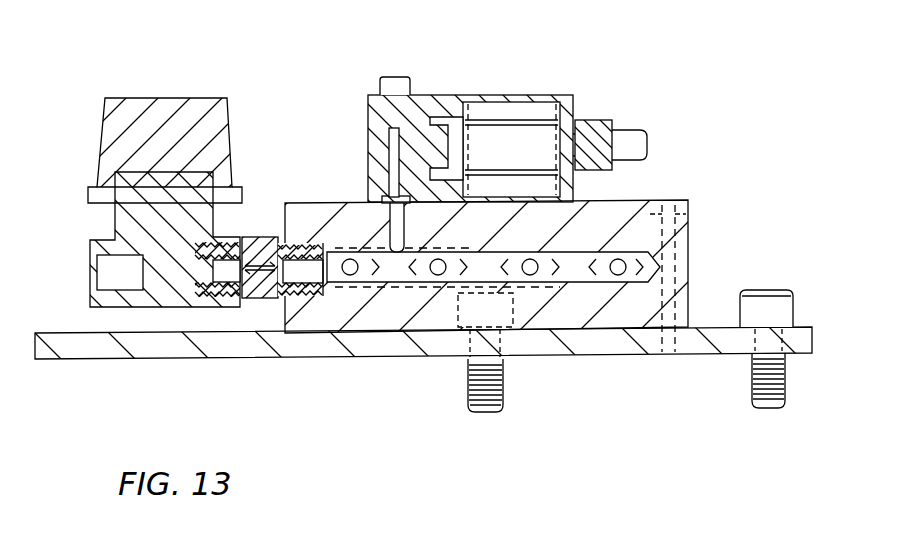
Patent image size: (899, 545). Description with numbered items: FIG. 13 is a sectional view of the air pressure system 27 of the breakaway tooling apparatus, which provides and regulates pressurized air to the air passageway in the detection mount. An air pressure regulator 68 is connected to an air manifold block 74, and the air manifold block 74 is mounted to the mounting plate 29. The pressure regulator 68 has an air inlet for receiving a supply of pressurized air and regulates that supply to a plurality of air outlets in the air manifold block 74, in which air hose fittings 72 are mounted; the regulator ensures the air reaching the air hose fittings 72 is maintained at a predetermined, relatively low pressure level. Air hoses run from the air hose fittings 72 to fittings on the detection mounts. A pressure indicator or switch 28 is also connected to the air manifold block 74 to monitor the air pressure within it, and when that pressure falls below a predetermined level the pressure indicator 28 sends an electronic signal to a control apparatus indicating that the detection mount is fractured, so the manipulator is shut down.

The air pressure system 27 is at (672, 128).
The pressure indicator or switch 28 is at (472, 95).
The mounting plate 29 is at (196, 360).
The air pressure regulator 68 is at (164, 96).
The air hose fittings 72 is at (365, 284).
The air manifold block 74 is at (691, 245).